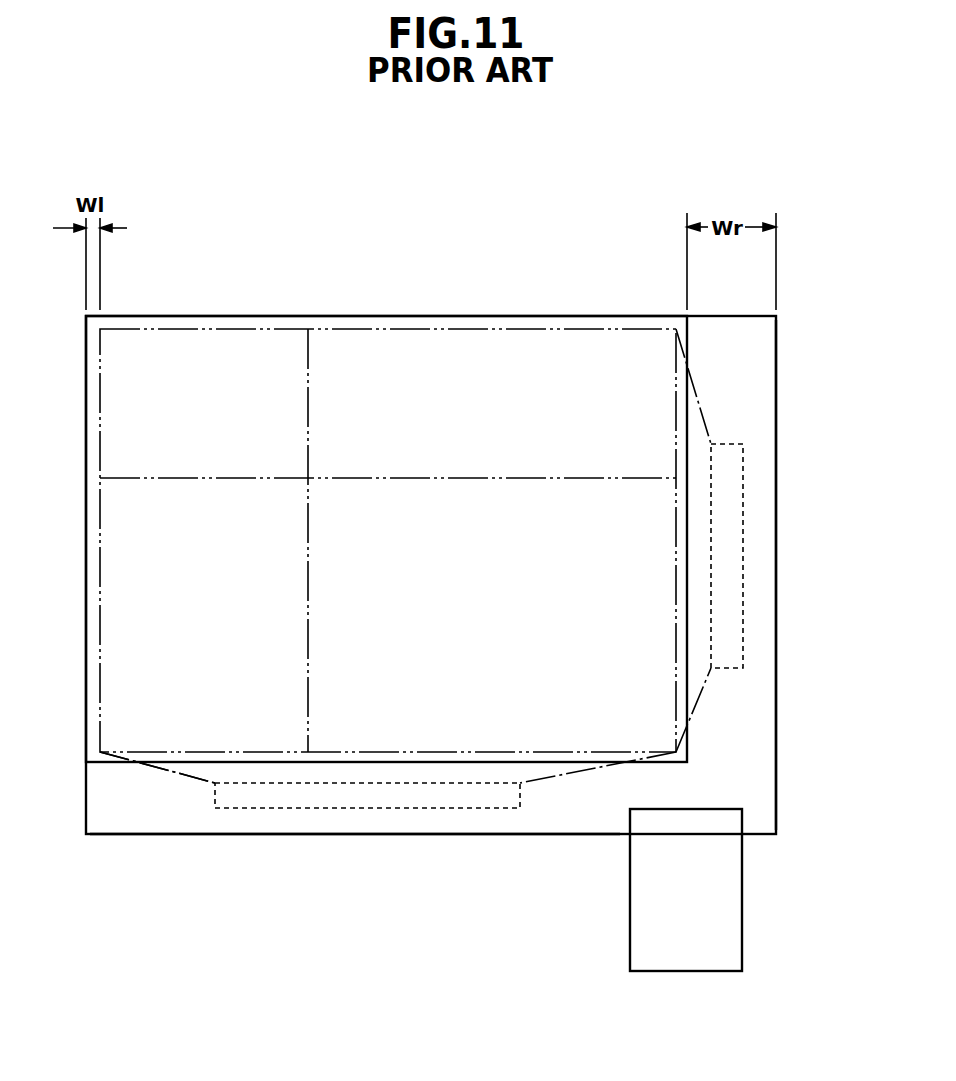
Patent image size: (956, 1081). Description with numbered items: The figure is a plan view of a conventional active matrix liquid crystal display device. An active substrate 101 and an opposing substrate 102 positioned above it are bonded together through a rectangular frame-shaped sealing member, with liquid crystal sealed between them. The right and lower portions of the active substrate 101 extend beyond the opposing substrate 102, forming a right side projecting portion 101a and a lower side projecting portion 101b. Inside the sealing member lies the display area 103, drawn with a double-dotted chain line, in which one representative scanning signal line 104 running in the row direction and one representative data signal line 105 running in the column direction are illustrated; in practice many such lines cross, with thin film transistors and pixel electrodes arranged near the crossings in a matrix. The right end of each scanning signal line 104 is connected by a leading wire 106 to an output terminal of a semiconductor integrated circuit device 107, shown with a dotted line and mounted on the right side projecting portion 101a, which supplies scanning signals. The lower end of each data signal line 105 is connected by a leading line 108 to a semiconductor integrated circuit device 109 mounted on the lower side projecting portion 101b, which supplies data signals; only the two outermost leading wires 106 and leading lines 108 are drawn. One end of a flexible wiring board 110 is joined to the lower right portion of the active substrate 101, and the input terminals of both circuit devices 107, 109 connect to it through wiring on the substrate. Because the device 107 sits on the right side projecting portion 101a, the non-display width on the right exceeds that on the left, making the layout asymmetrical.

The active substrate 101 is at (735, 316).
The right side projecting portion 101a is at (764, 345).
The lower side projecting portion 101b is at (111, 825).
The opposing substrate 102 is at (630, 316).
The display area 103 is at (480, 360).
The scanning signal line 104 is at (479, 482).
The data signal line 105 is at (310, 652).
The leading wire 106 is at (697, 430).
The semiconductor integrated circuit device 107 is at (730, 500).
The leading line 108 is at (205, 770).
The semiconductor integrated circuit device 109 is at (349, 793).
The flexible wiring board 110 is at (730, 902).